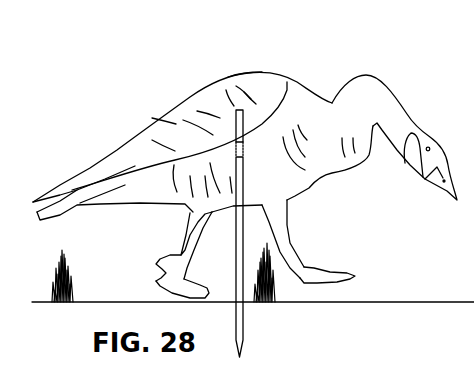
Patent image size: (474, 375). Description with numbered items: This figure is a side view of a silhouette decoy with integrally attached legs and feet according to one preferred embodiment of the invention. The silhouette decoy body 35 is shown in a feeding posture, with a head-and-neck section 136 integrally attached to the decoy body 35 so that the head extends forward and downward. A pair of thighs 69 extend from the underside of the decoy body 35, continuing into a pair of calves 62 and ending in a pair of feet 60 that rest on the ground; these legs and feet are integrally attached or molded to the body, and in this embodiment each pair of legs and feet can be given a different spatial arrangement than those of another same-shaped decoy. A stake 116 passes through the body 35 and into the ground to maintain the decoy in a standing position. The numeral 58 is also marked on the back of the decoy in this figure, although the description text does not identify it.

The silhouette decoy body 35 is at (150, 117).
The back of decoy 58 is at (228, 58).
The head-and-neck section 136 is at (407, 95).
The thigh 69 is at (195, 219).
The calf 62 is at (183, 242).
The foot 60 is at (156, 282).
The stake 116 is at (246, 331).